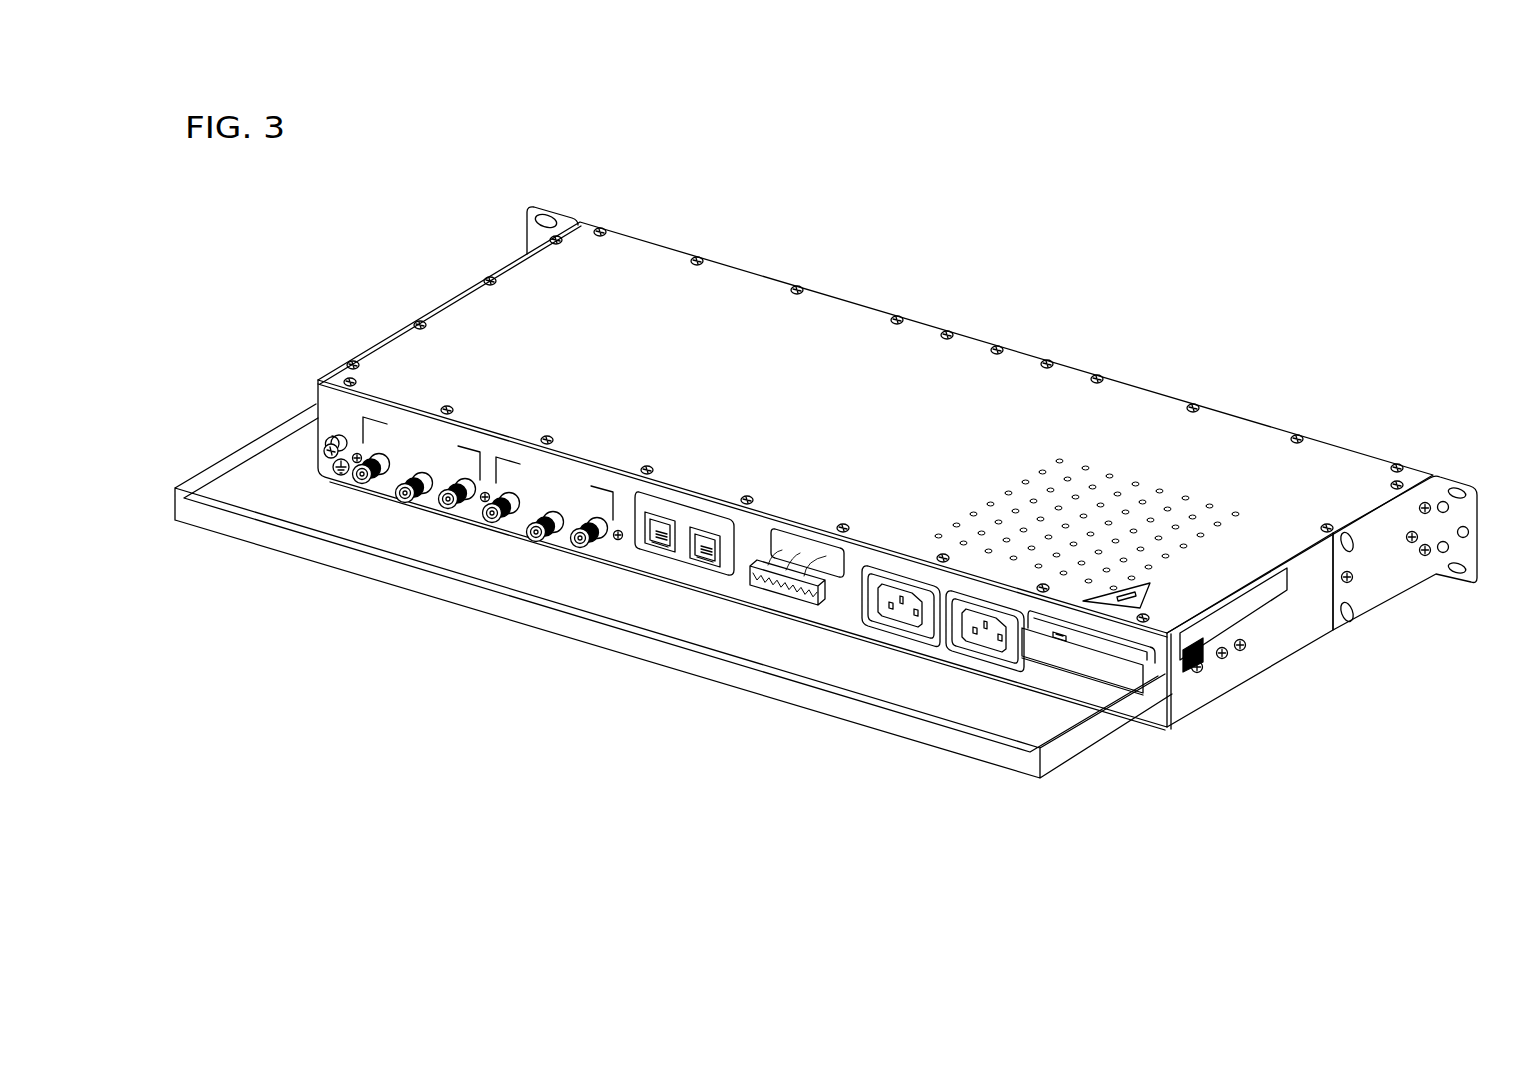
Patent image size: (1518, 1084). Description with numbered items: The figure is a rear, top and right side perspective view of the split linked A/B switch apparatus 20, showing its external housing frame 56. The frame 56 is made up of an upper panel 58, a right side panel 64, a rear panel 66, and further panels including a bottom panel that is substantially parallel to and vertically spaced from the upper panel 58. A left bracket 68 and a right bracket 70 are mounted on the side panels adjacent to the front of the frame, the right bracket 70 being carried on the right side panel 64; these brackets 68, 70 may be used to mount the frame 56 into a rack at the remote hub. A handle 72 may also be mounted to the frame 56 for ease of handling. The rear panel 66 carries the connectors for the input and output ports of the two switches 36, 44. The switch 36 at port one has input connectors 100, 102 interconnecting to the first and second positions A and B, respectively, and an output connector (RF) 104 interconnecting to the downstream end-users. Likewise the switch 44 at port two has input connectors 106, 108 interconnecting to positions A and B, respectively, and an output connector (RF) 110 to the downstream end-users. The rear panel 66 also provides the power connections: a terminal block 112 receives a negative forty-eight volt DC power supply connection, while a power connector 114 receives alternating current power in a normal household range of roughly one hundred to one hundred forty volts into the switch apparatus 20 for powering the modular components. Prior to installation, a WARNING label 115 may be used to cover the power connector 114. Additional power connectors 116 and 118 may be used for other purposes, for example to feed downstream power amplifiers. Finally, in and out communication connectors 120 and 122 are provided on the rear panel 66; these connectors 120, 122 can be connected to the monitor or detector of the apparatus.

The switch apparatus 20 is at (826, 475).
The switch at port 1 36 is at (456, 458).
The switch at port 2 44 is at (573, 494).
The external housing frame 56 is at (875, 436).
The upper panel 58 is at (875, 385).
The right side panel 64 is at (1287, 637).
The rear panel 66 is at (744, 543).
The left bracket 68 is at (538, 218).
The right bracket 70 is at (1390, 577).
The handle 72 is at (915, 730).
The input connector 100 is at (363, 484).
The input connector 102 is at (407, 502).
The output connector (RF) 104 is at (459, 524).
The input connector 106 is at (494, 522).
The input connector 108 is at (539, 542).
The output connector (RF) 110 is at (576, 498).
The terminal block 112 is at (782, 600).
The power connector 114 is at (1077, 695).
The WARNING label 115 is at (1032, 661).
The additional power connector 116 is at (978, 645).
The additional power connector 118 is at (902, 624).
The in communication connector 120 is at (658, 553).
The out communication connector 122 is at (708, 568).